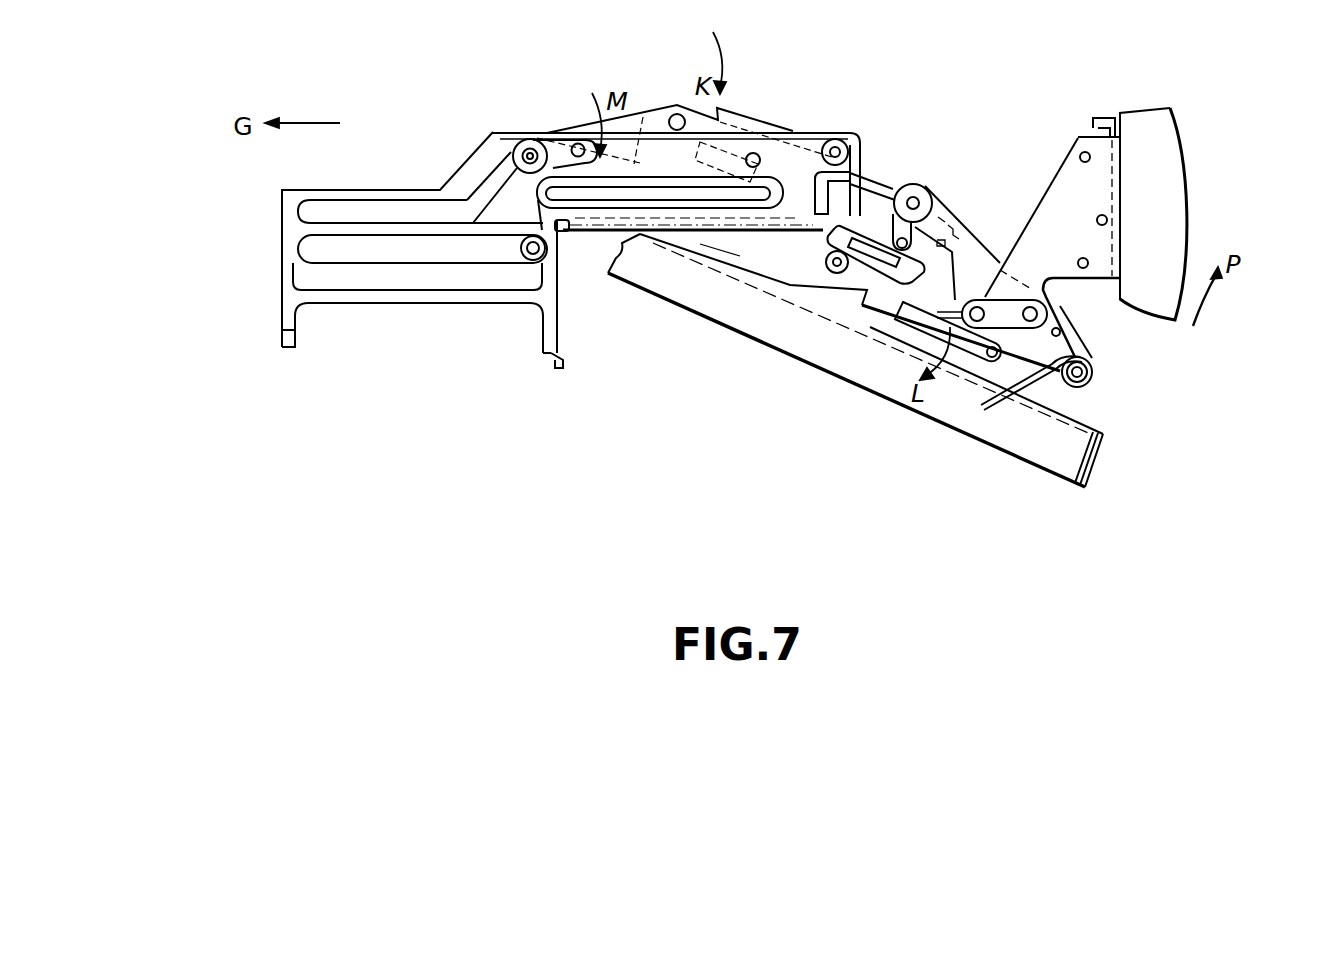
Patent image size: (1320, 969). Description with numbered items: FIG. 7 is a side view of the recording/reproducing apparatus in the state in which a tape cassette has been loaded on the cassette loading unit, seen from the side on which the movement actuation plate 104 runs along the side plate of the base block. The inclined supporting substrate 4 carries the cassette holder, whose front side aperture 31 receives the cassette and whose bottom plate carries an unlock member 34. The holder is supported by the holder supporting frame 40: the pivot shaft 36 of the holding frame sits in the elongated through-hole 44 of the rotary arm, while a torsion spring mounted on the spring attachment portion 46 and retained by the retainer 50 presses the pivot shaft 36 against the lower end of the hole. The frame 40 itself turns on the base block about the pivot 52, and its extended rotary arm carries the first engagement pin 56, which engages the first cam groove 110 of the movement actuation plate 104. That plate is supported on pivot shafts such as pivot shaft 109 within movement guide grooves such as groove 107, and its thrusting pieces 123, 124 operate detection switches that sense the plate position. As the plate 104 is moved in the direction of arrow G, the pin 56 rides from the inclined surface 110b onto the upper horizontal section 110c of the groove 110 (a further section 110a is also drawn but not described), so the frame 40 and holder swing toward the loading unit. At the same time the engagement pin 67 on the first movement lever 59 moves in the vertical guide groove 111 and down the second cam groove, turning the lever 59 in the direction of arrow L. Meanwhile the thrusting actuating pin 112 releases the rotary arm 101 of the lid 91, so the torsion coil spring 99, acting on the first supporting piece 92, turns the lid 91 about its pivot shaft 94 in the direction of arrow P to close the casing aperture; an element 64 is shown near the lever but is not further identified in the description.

The supporting substrate 4 is at (1097, 468).
The front side aperture 31 is at (680, 199).
The unlock member 34 is at (708, 236).
The pivot shaft 36 is at (907, 236).
The holder supporting frame 40 is at (748, 117).
The through-hole 44 is at (932, 190).
The spring attachment portion 46 is at (990, 222).
The retainer 50 is at (883, 190).
The pivot 52 is at (676, 104).
The first engagement pin 56 is at (523, 141).
The first movement lever 59 is at (957, 336).
The slotted arm 64 is at (873, 258).
The engagement pin 67 is at (828, 268).
The lid 91 is at (1160, 198).
The first supporting piece 92 is at (1072, 186).
The pivot shaft 94 is at (1095, 370).
The torsion coil spring 99 is at (1045, 382).
The rotary arm 101 is at (970, 185).
The movement actuation plate 104 is at (282, 195).
The movement guide groove 107 is at (347, 248).
The pivot shaft 109 is at (527, 258).
The first cam groove 110 is at (473, 180).
The slot portion 110a is at (330, 214).
The inclined surface 110b is at (558, 220).
The upper horizontal section 110c is at (562, 146).
The guide groove 111 is at (800, 222).
The thrusting actuating pin 112 is at (836, 139).
The first thrusting piece 123 is at (560, 371).
The second thrusting piece 124 is at (282, 327).